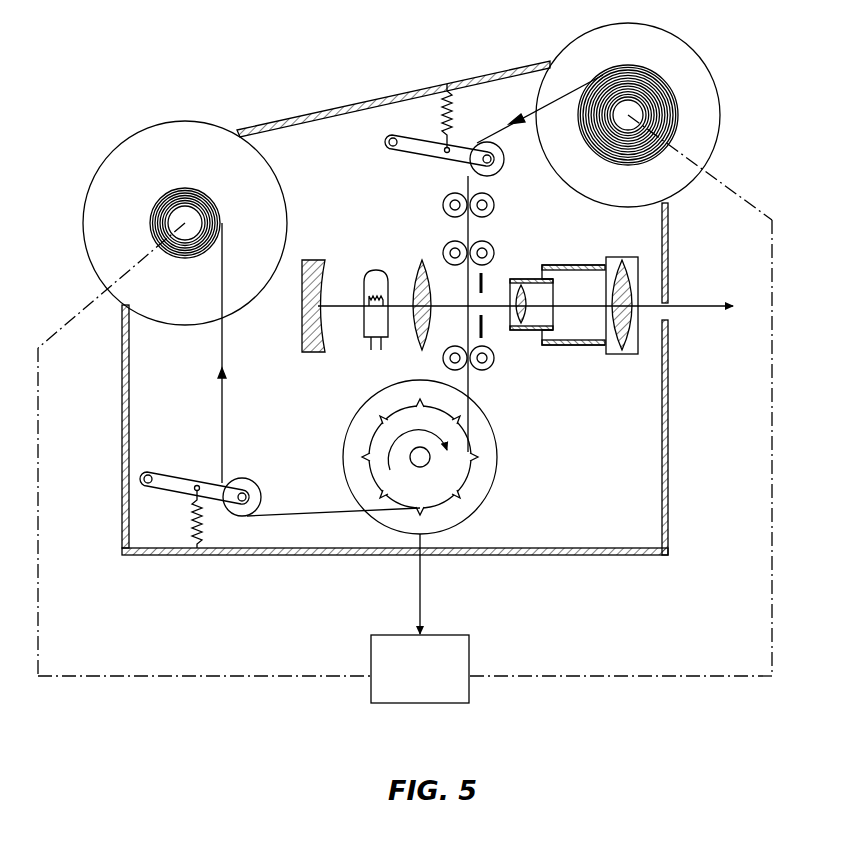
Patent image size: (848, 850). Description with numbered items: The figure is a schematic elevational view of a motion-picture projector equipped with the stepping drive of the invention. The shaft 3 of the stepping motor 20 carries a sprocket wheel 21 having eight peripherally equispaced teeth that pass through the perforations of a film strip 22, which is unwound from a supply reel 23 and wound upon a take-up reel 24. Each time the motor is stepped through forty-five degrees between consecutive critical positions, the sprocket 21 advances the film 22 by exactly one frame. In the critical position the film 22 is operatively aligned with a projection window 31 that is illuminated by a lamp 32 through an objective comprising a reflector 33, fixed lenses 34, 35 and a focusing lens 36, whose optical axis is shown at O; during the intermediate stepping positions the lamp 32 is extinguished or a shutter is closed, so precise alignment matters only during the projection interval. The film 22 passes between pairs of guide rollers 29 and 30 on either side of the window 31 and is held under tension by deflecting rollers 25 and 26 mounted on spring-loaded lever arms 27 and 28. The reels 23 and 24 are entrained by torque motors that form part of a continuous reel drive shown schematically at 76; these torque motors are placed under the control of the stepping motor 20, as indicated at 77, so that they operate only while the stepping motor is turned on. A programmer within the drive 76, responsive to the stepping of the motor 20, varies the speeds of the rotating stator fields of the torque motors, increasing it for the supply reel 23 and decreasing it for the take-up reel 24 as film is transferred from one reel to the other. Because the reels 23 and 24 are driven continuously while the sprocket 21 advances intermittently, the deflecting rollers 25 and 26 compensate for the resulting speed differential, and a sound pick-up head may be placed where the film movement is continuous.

The shaft 3 is at (428, 461).
The motor 20 is at (490, 478).
The sprocket wheel 21 is at (376, 447).
The film strip 22 is at (470, 388).
The supply reel 23 is at (700, 68).
The take-up reel 24 is at (134, 140).
The deflecting roller 25 is at (250, 482).
The deflecting roller 26 is at (503, 166).
The spring-loaded lever arm 27 is at (167, 478).
The spring-loaded lever arm 28 is at (424, 142).
The guide rollers 29 is at (487, 242).
The guide rollers 30 is at (492, 366).
The projection window 31 is at (484, 300).
The lamp 32 is at (366, 282).
The reflector 33 is at (313, 353).
The fixed lens 34 is at (417, 265).
The fixed lens 35 is at (624, 268).
The focusing lens 36 is at (526, 318).
The optical axis O is at (703, 308).
The continuous reel drive 76 is at (460, 703).
The control connection 77 is at (418, 594).